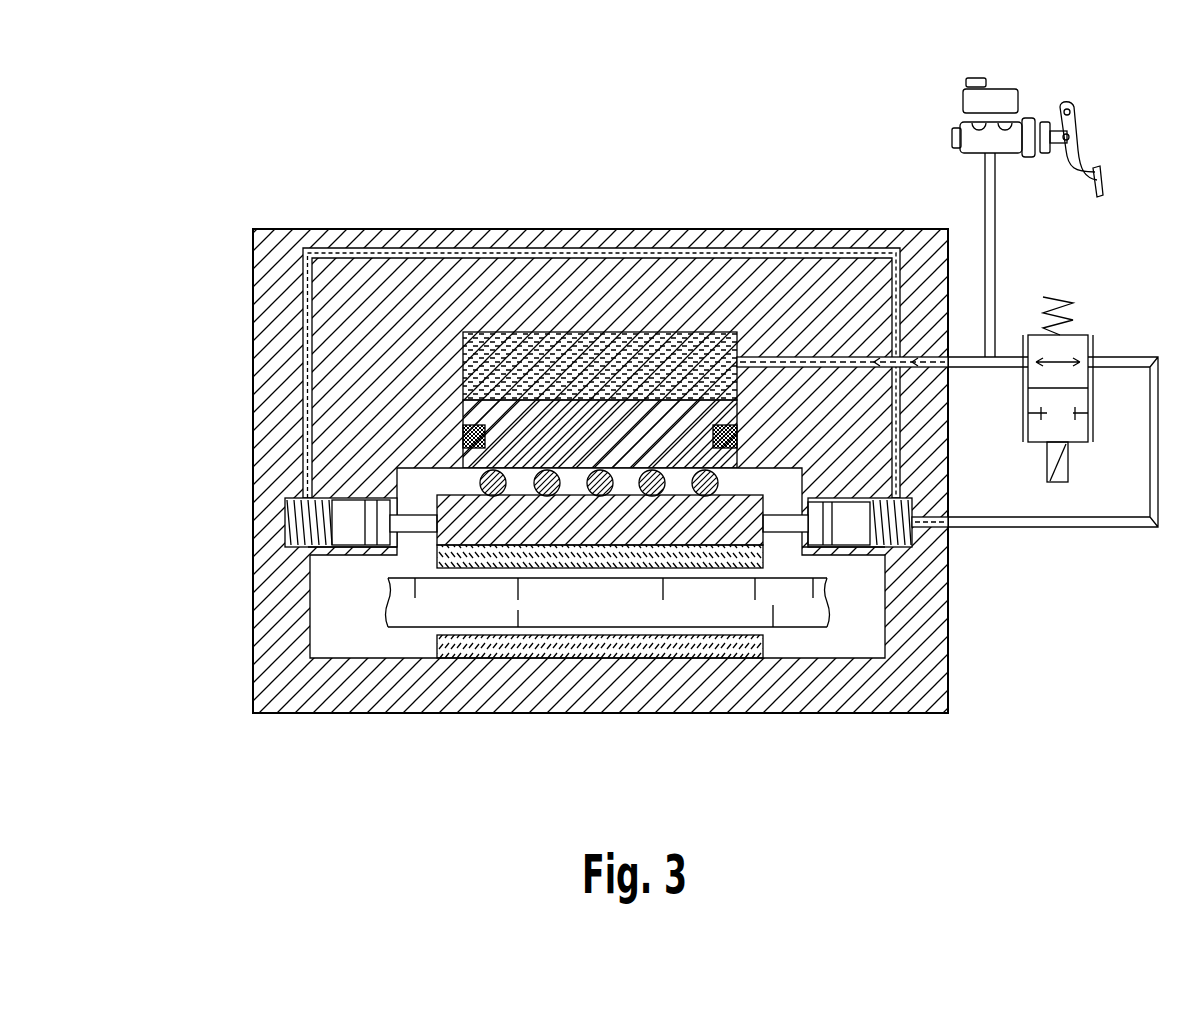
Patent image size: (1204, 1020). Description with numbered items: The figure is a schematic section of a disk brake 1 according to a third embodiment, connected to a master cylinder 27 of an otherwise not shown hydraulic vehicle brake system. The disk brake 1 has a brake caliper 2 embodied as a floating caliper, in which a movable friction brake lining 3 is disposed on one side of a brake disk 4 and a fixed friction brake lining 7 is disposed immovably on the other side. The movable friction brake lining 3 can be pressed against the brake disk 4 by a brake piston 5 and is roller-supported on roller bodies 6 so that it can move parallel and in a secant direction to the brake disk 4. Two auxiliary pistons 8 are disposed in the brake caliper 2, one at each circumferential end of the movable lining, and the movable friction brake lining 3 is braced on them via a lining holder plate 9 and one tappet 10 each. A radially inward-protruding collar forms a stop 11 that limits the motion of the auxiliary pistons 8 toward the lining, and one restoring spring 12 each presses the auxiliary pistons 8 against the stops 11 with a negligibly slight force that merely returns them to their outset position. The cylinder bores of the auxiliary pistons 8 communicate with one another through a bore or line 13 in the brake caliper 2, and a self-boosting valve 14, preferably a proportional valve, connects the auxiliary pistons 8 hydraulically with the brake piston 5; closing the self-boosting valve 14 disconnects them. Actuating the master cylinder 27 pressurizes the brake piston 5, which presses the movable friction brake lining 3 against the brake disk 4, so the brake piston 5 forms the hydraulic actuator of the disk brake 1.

The disk brake 1 is at (278, 160).
The brake caliper 2 is at (280, 358).
The movable friction brake lining 3 is at (625, 552).
The brake disk 4 is at (567, 598).
The brake piston 5 is at (690, 428).
The roller bodies 6 is at (706, 497).
The fixed friction brake lining 7 is at (505, 650).
The auxiliary pistons 8 is at (347, 514).
The lining holder plate 9 is at (493, 530).
The tappet 10 is at (417, 522).
The stop 11 is at (375, 547).
The restoring spring 12 is at (288, 519).
The bore or line 13 is at (810, 248).
The self-boosting valve 14 is at (1080, 335).
The master cylinder 27 is at (998, 142).